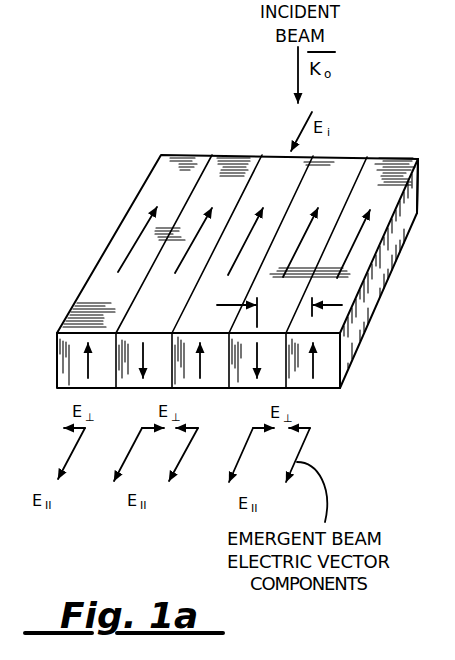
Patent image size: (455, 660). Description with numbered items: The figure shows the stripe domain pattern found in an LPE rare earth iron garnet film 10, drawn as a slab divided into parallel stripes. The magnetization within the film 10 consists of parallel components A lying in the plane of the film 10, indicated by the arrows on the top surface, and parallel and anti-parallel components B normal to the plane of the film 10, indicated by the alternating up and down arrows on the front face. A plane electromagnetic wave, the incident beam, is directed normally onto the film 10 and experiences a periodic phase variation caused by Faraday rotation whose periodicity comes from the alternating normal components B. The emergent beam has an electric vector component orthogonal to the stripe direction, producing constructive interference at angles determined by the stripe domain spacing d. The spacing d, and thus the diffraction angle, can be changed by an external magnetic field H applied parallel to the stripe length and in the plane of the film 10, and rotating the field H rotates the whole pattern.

The LPE rare earth iron garnet film 10 is at (353, 347).
The parallel components A is at (141, 241).
The parallel and anti-parallel components B is at (85, 362).
The external magnetic field H is at (445, 190).
The stripe domain spacing d is at (279, 312).